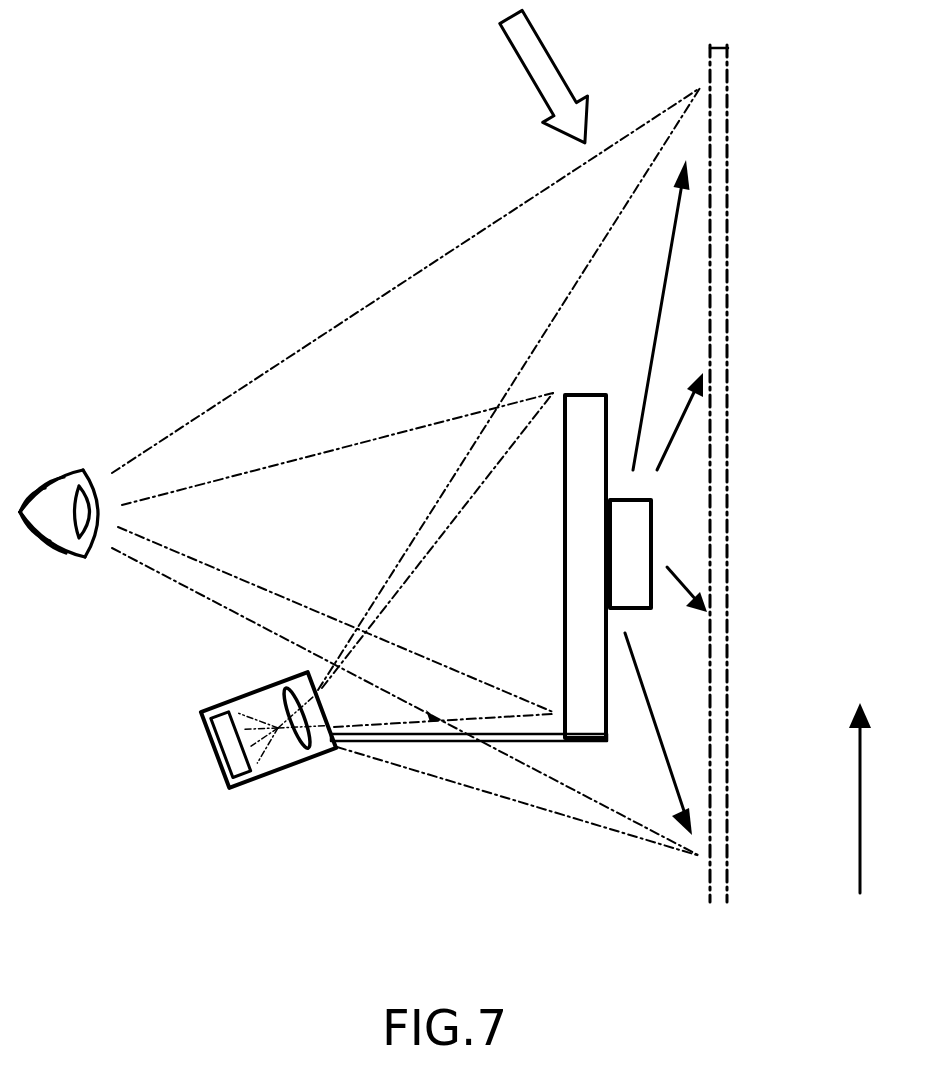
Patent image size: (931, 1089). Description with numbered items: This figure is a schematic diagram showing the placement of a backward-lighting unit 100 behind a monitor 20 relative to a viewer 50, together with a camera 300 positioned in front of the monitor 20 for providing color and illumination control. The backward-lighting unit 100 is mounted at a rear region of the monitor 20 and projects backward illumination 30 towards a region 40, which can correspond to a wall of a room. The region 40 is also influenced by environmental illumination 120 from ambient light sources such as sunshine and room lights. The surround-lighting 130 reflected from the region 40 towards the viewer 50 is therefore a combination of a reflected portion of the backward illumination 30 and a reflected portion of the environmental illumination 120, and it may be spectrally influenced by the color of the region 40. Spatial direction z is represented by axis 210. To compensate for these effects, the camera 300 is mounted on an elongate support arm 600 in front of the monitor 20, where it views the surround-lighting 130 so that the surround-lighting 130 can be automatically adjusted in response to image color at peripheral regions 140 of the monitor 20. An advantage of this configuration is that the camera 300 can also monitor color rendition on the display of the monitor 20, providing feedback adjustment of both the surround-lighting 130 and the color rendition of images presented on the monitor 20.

The monitor 20 is at (582, 542).
The backward illumination 30 is at (662, 302).
The region 40 is at (720, 802).
The viewer 50 is at (61, 615).
The backward-lighting unit 100 is at (628, 567).
The environmental illumination 120 is at (558, 97).
The surround-lighting 130 is at (552, 322).
The peripheral regions of the monitor 140 is at (262, 468).
The axis z 210 is at (857, 842).
The camera 300 is at (243, 718).
The elongate support arm 600 is at (400, 742).